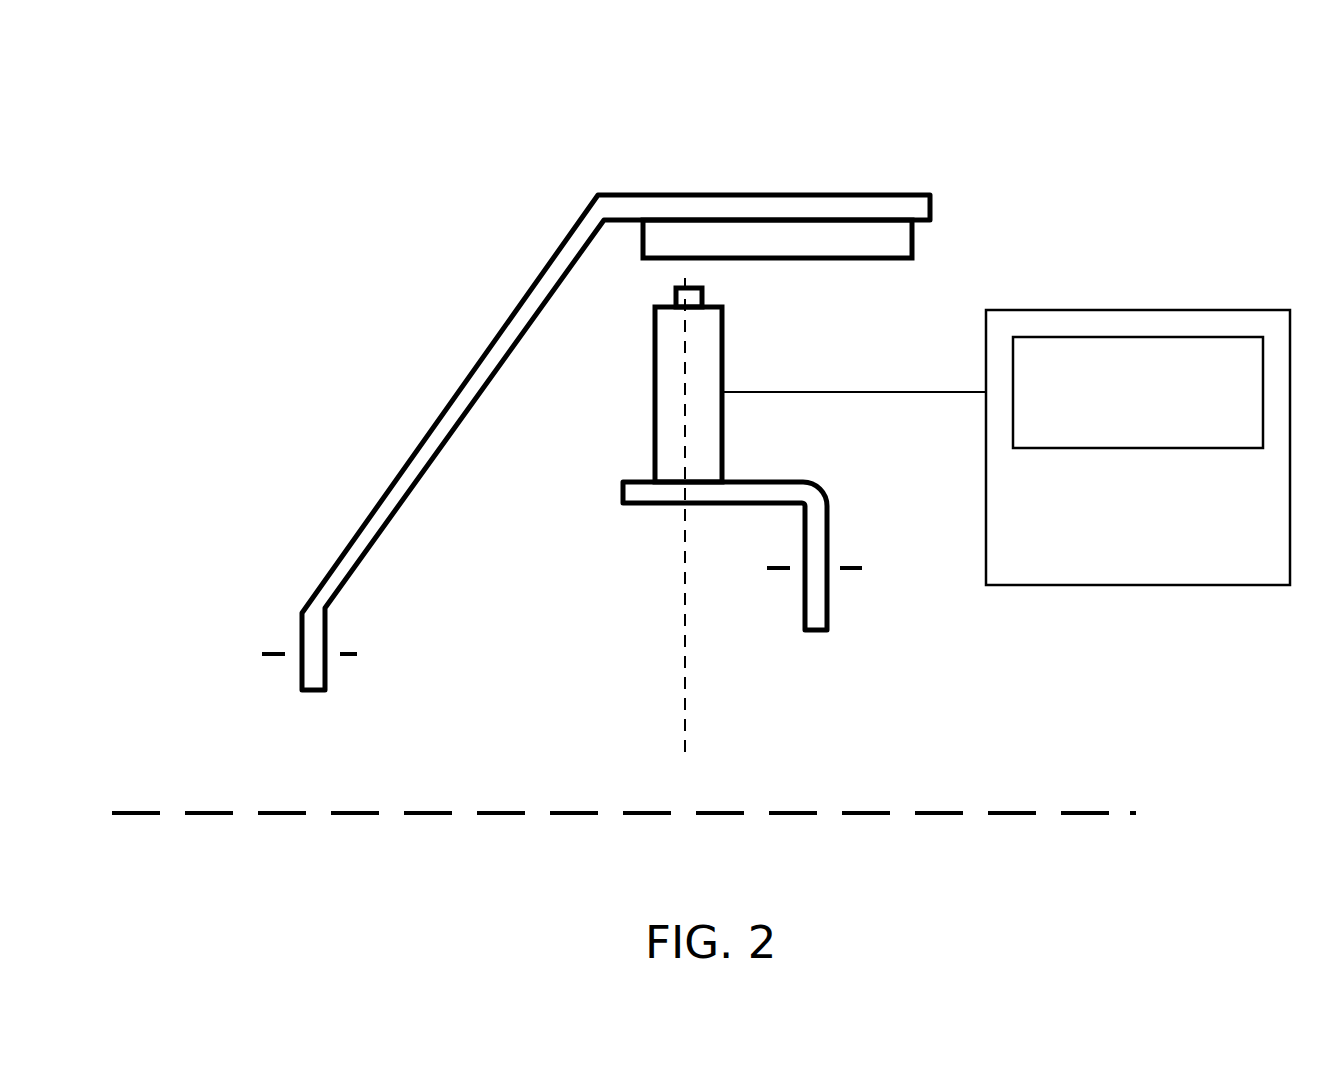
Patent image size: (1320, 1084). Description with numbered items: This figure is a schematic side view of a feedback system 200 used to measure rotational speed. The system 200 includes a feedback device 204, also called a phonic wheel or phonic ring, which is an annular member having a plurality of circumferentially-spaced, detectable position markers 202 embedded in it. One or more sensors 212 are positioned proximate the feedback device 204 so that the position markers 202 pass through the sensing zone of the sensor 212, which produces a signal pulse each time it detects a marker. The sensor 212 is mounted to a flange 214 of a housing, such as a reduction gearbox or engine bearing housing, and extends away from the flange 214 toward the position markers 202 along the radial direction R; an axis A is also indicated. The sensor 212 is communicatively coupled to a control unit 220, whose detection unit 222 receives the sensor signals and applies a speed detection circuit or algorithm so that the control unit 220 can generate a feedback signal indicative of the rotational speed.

The feedback system 200 is at (342, 167).
The position marker 202 is at (753, 235).
The feedback device 204 is at (322, 578).
The sensor 212 is at (655, 375).
The flange 214 is at (622, 492).
The control unit 220 is at (1167, 573).
The detection unit 222 is at (1167, 429).